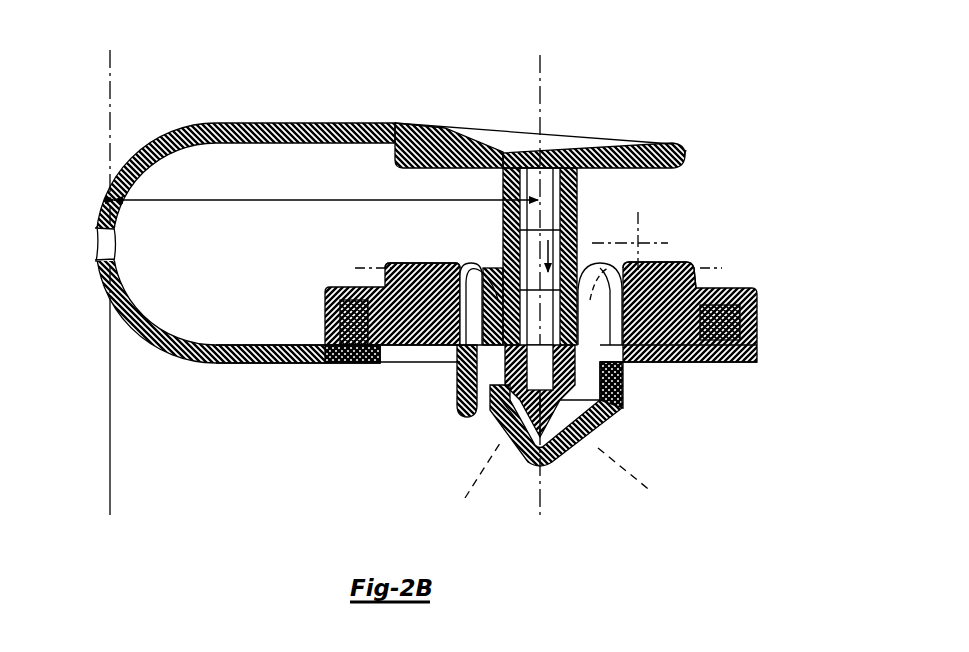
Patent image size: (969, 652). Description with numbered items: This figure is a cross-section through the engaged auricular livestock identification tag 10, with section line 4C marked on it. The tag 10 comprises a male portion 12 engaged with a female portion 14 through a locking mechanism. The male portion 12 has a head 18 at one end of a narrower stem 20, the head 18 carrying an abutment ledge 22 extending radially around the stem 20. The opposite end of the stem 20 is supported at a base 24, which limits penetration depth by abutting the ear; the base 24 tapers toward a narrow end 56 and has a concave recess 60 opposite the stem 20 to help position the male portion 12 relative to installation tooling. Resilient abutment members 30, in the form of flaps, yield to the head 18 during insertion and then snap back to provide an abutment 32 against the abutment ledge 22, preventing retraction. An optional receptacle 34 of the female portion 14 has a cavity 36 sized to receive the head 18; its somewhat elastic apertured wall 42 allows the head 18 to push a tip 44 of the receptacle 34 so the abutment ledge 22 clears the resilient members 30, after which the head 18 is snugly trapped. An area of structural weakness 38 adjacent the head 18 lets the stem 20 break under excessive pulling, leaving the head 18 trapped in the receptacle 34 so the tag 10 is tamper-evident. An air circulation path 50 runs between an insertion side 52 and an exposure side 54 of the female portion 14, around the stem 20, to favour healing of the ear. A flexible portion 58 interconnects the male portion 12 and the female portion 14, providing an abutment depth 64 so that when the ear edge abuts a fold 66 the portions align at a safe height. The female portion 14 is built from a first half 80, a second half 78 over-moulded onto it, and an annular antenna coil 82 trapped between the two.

The auricular livestock identification tag 10 is at (200, 104).
The male portion 12 is at (674, 128).
The female portion 14 is at (768, 330).
The head 18 is at (625, 388).
The stem 20 is at (580, 188).
The abutment ledge 22 is at (665, 345).
The base 24 is at (425, 140).
The resilient abutment members 30 is at (410, 262).
The abutment 32 is at (462, 384).
The receptacle 34 is at (612, 432).
The cavity 36 is at (497, 402).
The area of structural weakness 38 is at (478, 290).
The apertured wall 42 is at (562, 455).
The tip 44 is at (512, 456).
The air circulation path 50 is at (470, 492).
The insertion side 52 is at (452, 265).
The exposure side 54 is at (541, 369).
The narrow end 56 is at (692, 150).
The flexible portion 58 is at (145, 126).
The concave recess 60 is at (496, 125).
The abutment depth 64 is at (295, 199).
The fold 66 is at (101, 248).
The second half 78 is at (278, 364).
The first half 80 is at (330, 289).
The annular antenna coil 82 is at (330, 312).
The section line 4C is at (508, 240).